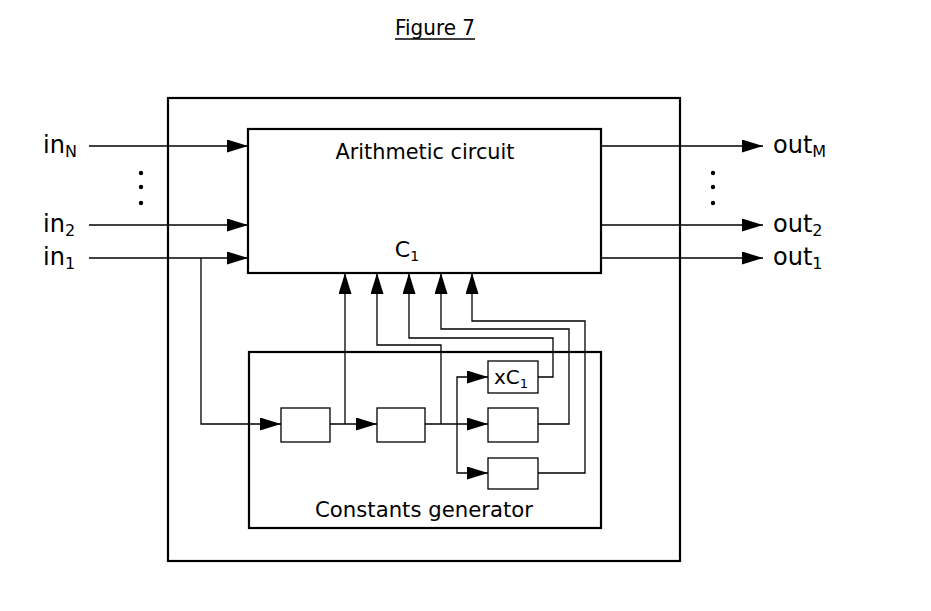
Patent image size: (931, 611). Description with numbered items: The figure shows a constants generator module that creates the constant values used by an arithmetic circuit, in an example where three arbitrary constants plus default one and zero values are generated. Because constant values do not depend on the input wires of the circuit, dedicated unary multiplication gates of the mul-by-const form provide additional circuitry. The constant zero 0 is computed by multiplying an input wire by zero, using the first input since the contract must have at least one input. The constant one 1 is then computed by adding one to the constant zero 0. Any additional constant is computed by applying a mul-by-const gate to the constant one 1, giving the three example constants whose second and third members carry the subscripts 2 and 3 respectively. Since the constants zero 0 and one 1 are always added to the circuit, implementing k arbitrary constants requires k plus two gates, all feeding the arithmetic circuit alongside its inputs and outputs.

The constant zero 0 is at (316, 339).
The constant one 1 is at (405, 339).
The constant C2 multiplier (xC2) 2 is at (498, 339).
The constant C3 multiplier (xC3) 3 is at (522, 363).